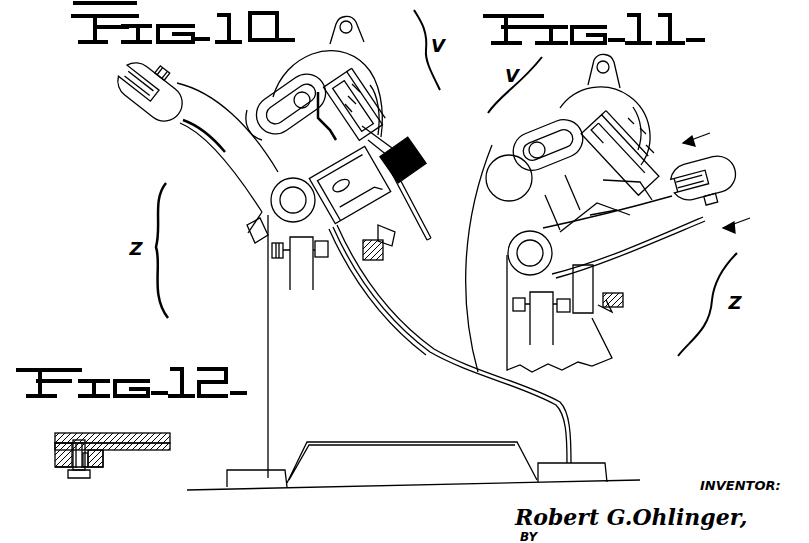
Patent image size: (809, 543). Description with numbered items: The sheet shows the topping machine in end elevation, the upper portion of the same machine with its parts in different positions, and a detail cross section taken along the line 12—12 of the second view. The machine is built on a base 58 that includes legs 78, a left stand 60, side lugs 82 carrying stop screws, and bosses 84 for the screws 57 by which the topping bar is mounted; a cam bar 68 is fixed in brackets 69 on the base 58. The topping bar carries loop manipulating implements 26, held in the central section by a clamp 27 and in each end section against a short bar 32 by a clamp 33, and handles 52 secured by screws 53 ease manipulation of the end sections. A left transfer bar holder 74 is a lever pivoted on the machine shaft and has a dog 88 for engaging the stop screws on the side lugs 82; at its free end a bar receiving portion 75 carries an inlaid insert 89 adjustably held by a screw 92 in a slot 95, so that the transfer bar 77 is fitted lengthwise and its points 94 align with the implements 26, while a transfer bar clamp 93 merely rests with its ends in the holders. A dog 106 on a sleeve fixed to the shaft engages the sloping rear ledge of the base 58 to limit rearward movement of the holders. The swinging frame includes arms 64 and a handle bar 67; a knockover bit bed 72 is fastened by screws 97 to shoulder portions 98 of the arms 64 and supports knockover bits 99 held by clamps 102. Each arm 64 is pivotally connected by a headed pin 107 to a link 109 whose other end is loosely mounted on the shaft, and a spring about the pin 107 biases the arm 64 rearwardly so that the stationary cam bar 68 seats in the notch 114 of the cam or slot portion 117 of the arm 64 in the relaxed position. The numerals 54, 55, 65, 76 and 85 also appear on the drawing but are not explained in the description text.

In FIG. 11, the section line 12— 12 is at (731, 176).
In FIG. 10, the loop manipulating implements 26 is at (412, 160).
In FIG. 11, the loop manipulating implements 26 is at (640, 195).
In FIG. 10, the clamp 27 is at (368, 130).
In FIG. 10, the short bar 32 is at (347, 268).
In FIG. 11, the short bar 32 is at (617, 210).
In FIG. 11, the clamp 33 is at (597, 205).
In FIG. 10, the handles 52 is at (426, 230).
In FIG. 10, the screws 53 is at (372, 173).
In FIG. 10, the slot 54 is at (352, 181).
In FIG. 10, the plate edge 55 is at (404, 188).
In FIG. 10, the screws 57 is at (372, 259).
In FIG. 11, the screws 57 is at (610, 308).
In FIG. 10, the base 58 is at (422, 442).
In FIG. 10, the left stand 60 is at (267, 320).
In FIG. 11, the left stand 60 is at (607, 347).
In FIG. 10, the arms 64 is at (295, 73).
In FIG. 11, the arms 64 is at (580, 93).
In FIG. 10, the pivot hub 65 is at (283, 195).
In FIG. 11, the pivot hub 65 is at (527, 255).
In FIG. 10, the handle bar 67 is at (352, 26).
In FIG. 11, the handle bar 67 is at (610, 68).
In FIG. 10, the cam bar 68 is at (303, 97).
In FIG. 11, the cam bar 68 is at (535, 147).
In FIG. 10, the brackets 69 is at (362, 114).
In FIG. 11, the brackets 69 is at (562, 178).
In FIG. 10, the knockover bit bed 72 is at (350, 78).
In FIG. 11, the knockover bit bed 72 is at (618, 112).
In FIG. 10, the left transfer bar holder 74 is at (221, 133).
In FIG. 11, the left transfer bar holder 74 is at (663, 238).
In FIG. 12, the left transfer bar holder 74 is at (60, 470).
In FIG. 10, the bar receiving portions 75 is at (126, 73).
In FIG. 11, the bar receiving portions 75 is at (712, 157).
In FIG. 12, the bar receiving portions 75 is at (97, 470).
In FIG. 10, the foot 76 is at (277, 483).
In FIG. 12, the transfer bar 77 is at (163, 452).
In FIG. 10, the legs 78 is at (590, 465).
In FIG. 10, the side lugs 82 is at (293, 263).
In FIG. 11, the side lugs 82 is at (533, 320).
In FIG. 10, the bosses 84 is at (381, 237).
In FIG. 11, the bosses 84 is at (625, 298).
In FIG. 10, the bolt 85 is at (273, 253).
In FIG. 11, the bolt 85 is at (513, 304).
In FIG. 10, the dogs 88 is at (355, 93).
In FIG. 11, the dogs 88 is at (590, 280).
In FIG. 10, the inlaid inserts 89 is at (143, 98).
In FIG. 11, the inlaid inserts 89 is at (718, 169).
In FIG. 12, the inlaid inserts 89 is at (55, 448).
In FIG. 10, the screws 92 is at (158, 72).
In FIG. 11, the screws 92 is at (720, 188).
In FIG. 12, the screws 92 is at (78, 479).
In FIG. 11, the transfer bar clamp 93 is at (688, 166).
In FIG. 12, the transfer bar clamp 93 is at (155, 433).
In FIG. 11, the points 94 is at (680, 228).
In FIG. 12, the slots 95 is at (100, 457).
In FIG. 11, the screws 97 is at (643, 128).
In FIG. 10, the shoulder portions 98 is at (360, 84).
In FIG. 11, the shoulder portions 98 is at (630, 118).
In FIG. 10, the knockover bits 99 is at (374, 146).
In FIG. 11, the knockover bits 99 is at (650, 148).
In FIG. 10, the clamps 102 is at (352, 102).
In FIG. 10, the dog 106 is at (255, 227).
In FIG. 10, the headed pin 107 is at (250, 120).
In FIG. 11, the headed pin 107 is at (504, 162).
In FIG. 10, the link 109 is at (262, 200).
In FIG. 11, the link 109 is at (520, 253).
In FIG. 10, the notch 114 is at (340, 66).
In FIG. 11, the notch 114 is at (600, 110).
In FIG. 10, the cam or slot portion 117 is at (272, 95).
In FIG. 11, the cam or slot portion 117 is at (553, 133).